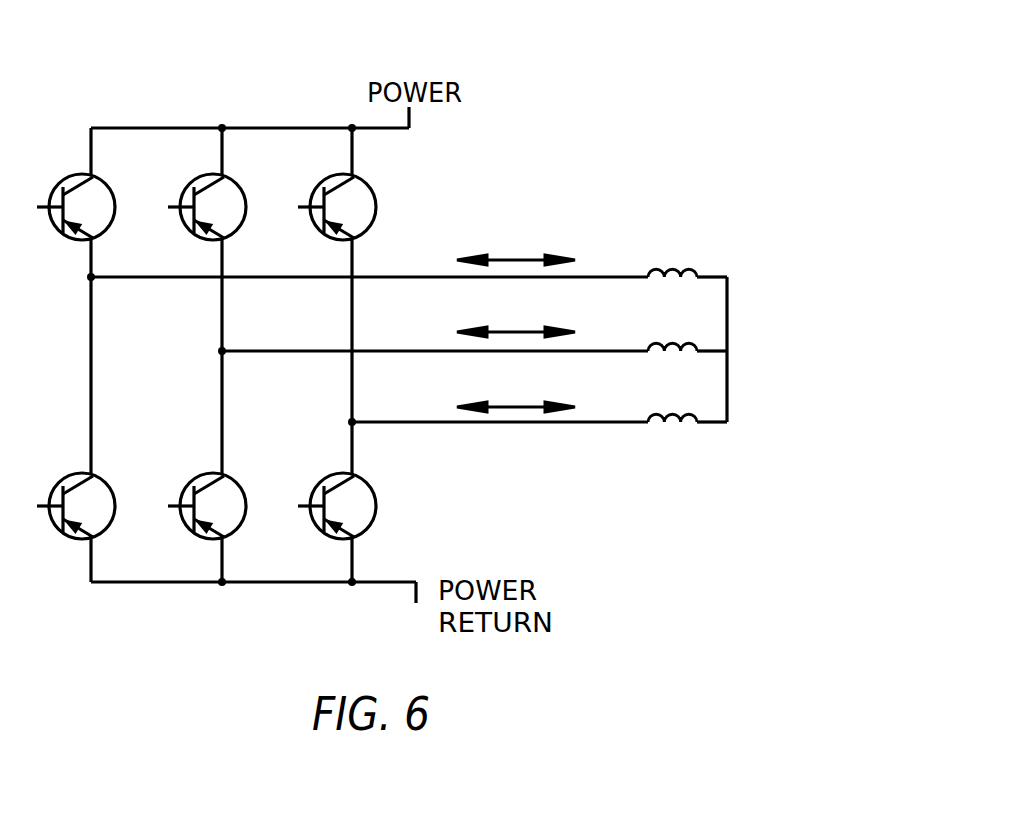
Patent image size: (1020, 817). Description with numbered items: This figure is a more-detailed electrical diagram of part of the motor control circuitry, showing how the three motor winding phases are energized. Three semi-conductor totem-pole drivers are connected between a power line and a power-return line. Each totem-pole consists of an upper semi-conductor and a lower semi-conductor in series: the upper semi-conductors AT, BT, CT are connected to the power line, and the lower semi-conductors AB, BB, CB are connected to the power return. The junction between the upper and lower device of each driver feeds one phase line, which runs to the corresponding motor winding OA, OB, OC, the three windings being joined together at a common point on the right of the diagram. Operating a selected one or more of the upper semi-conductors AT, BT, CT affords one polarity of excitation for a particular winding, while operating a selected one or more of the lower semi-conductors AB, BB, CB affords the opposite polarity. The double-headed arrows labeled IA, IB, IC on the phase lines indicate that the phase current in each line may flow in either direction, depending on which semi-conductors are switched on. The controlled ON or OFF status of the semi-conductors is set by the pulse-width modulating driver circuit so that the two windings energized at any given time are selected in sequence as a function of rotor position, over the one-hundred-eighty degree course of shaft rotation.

The semi-conductor AT is at (74, 182).
The semi-conductor BT is at (205, 183).
The semi-conductor CT is at (337, 184).
The semi-conductor AB is at (74, 483).
The semi-conductor BB is at (203, 483).
The semi-conductor CB is at (337, 482).
The phase A current IA is at (516, 240).
The phase B current IB is at (516, 312).
The phase C current IC is at (516, 385).
The phase A output winding OA is at (672, 249).
The phase B output winding OB is at (672, 323).
The phase C output winding OC is at (672, 396).